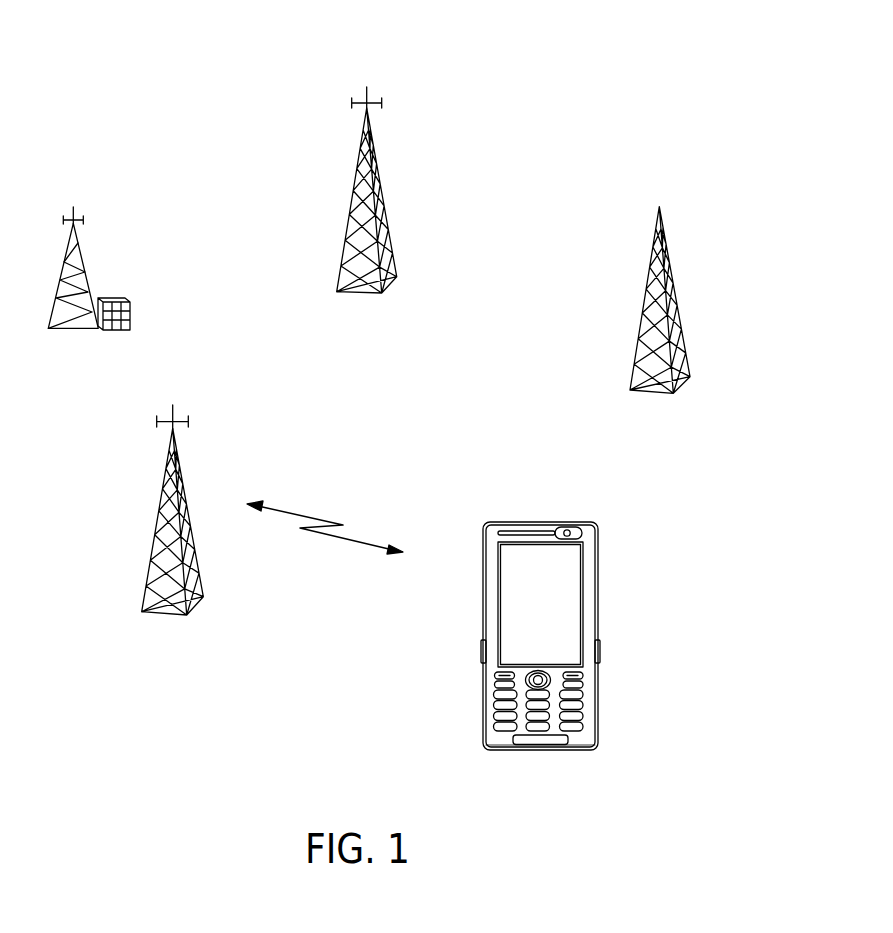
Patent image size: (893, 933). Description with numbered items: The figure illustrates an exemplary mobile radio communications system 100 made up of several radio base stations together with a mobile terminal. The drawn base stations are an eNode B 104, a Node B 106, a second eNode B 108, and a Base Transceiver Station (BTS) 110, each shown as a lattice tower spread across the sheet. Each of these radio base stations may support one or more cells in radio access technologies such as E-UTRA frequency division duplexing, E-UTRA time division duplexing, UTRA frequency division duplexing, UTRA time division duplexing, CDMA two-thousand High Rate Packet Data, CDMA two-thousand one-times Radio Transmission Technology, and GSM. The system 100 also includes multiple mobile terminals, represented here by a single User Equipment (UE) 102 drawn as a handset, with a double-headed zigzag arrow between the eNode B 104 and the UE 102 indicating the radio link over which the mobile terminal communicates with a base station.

The mobile radio communications system 100 is at (143, 107).
The User Equipment (UE) 102 is at (542, 520).
The eNode B 104 is at (180, 463).
The Node B 106 is at (85, 220).
The eNode B 108 is at (374, 144).
The Base Transceiver Station (BTS) 110 is at (667, 243).